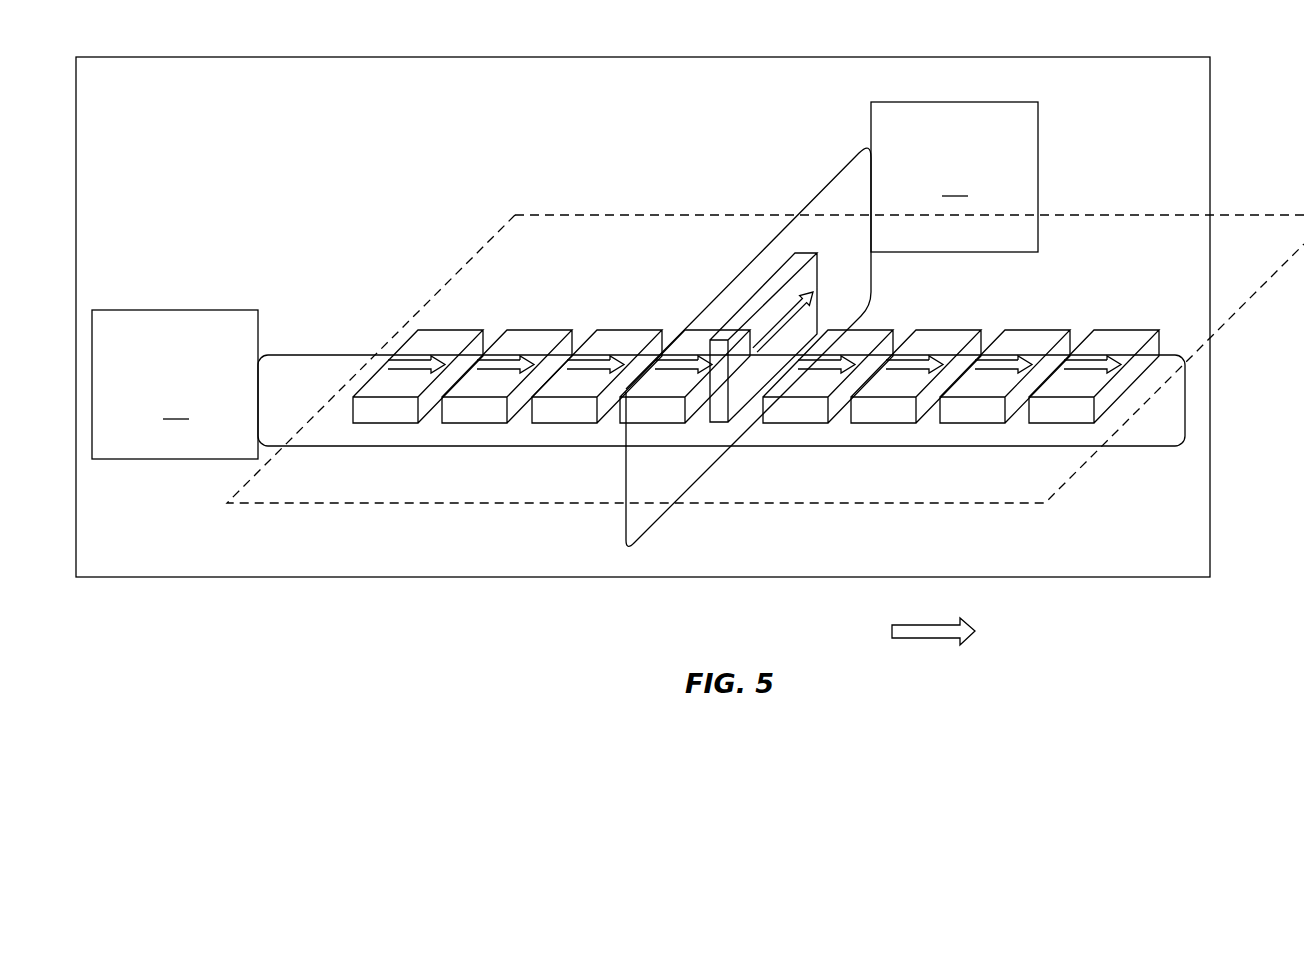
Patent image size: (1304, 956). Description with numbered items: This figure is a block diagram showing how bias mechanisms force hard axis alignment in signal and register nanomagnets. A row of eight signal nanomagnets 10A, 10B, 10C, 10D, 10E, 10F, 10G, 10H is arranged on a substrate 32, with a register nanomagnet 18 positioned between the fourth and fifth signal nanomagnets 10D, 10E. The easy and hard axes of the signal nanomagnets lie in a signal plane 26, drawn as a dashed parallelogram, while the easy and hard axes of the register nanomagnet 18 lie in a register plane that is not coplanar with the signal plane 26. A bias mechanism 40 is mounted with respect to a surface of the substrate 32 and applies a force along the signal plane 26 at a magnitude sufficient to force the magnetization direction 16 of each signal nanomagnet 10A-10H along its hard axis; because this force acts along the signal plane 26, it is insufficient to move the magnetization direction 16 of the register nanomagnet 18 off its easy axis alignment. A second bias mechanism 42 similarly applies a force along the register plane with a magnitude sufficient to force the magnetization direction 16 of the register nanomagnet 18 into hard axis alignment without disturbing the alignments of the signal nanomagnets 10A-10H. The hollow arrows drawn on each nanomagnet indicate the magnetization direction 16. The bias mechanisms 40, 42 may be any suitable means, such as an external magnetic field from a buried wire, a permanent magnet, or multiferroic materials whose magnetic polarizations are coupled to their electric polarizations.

The signal nanomagnet 10A is at (440, 328).
The signal nanomagnet 10B is at (557, 328).
The signal nanomagnet 10C is at (628, 328).
The signal nanomagnet 10D is at (655, 424).
The signal nanomagnet 10E is at (798, 424).
The signal nanomagnet 10F is at (958, 328).
The signal nanomagnet 10G is at (1048, 328).
The signal nanomagnet 10H is at (1140, 328).
The magnetization direction 16 is at (1029, 633).
The register nanomagnet 18 is at (818, 272).
The signal plane 26 is at (686, 215).
The substrate 32 is at (893, 57).
The bias mechanism 40 is at (175, 384).
The bias mechanism 42 is at (954, 177).